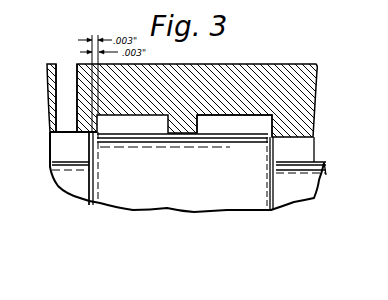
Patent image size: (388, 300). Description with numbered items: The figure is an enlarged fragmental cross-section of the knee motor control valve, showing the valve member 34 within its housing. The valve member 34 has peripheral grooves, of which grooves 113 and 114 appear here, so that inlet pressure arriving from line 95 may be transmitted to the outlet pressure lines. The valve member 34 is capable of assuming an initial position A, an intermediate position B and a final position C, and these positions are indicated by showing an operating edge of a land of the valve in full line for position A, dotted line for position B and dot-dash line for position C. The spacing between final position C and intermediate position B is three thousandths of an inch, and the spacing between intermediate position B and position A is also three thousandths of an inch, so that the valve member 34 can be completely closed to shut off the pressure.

The inlet pressure line 95 is at (61, 72).
The valve member 34 is at (207, 152).
The peripheral groove 113 is at (62, 158).
The peripheral groove 114 is at (293, 153).
The initial position A is at (100, 200).
The intermediate position B is at (93, 205).
The final position C is at (88, 196).